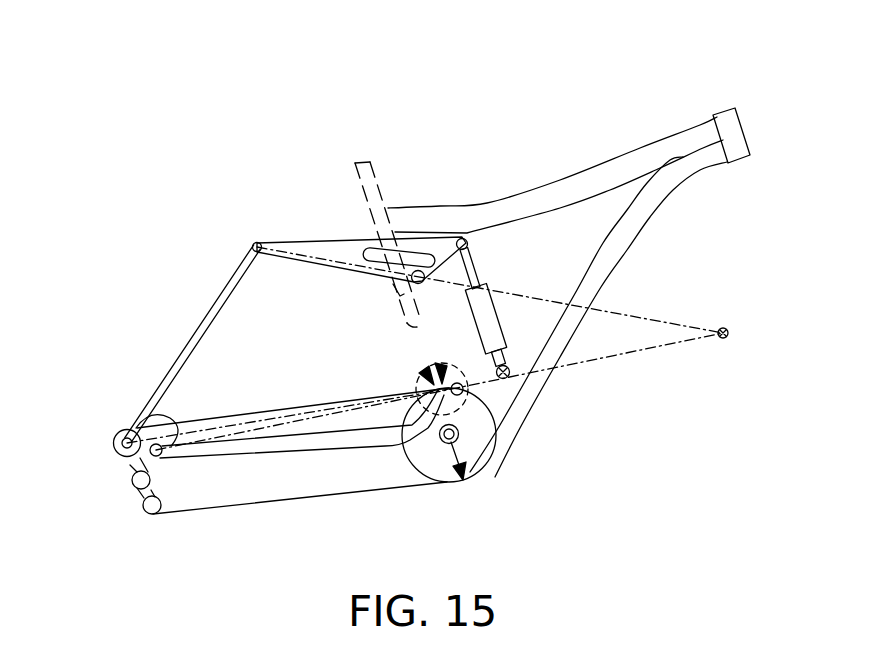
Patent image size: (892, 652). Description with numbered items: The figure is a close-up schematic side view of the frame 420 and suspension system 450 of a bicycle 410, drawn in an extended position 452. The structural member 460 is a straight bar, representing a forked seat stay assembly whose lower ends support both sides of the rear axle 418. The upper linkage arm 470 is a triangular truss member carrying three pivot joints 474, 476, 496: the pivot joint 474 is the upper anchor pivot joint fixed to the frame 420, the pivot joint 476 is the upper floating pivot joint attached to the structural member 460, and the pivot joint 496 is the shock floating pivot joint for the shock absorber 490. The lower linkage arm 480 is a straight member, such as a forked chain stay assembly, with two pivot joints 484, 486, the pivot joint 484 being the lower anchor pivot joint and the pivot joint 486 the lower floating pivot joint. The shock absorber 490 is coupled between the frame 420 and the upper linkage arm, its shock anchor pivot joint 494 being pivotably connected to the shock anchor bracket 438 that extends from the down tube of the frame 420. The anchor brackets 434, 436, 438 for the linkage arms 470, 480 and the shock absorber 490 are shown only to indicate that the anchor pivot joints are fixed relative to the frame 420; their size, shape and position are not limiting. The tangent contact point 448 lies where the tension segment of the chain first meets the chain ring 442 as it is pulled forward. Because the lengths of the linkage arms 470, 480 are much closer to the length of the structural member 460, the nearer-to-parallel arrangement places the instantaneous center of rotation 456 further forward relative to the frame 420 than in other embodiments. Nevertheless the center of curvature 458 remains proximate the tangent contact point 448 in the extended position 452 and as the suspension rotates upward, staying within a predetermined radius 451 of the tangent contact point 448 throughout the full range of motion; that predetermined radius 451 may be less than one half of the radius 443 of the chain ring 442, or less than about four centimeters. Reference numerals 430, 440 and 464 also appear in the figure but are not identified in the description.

The bicycle 410 is at (246, 90).
The rear axle 418 is at (114, 442).
The frame 420 is at (692, 241).
The seat tube 430 is at (355, 162).
The anchor bracket 434 is at (407, 251).
The anchor bracket 436 is at (512, 403).
The shock anchor bracket 438 is at (523, 388).
The drivetrain chain 440 is at (208, 556).
The chain ring 442 is at (463, 482).
The radius of the chain ring 443 is at (448, 481).
The tangent contact point 448 is at (418, 372).
The suspension system 450 is at (104, 264).
The predetermined radius 451 is at (406, 430).
The extended position 452 is at (156, 426).
The instantaneous center of rotation 456 is at (729, 338).
The center of curvature 458 is at (435, 365).
The structural member 460 is at (212, 304).
The seat stay tube 464 is at (187, 363).
The upper linkage arm 470 is at (347, 238).
The pivot joint 474 is at (412, 281).
The pivot joint 476 is at (256, 245).
The lower linkage arm 480 is at (297, 451).
The pivot joint 484 is at (493, 433).
The pivot joint 486 is at (161, 456).
The shock absorber 490 is at (516, 298).
The shock anchor pivot joint 494 is at (490, 370).
The pivot joint 496 is at (462, 239).